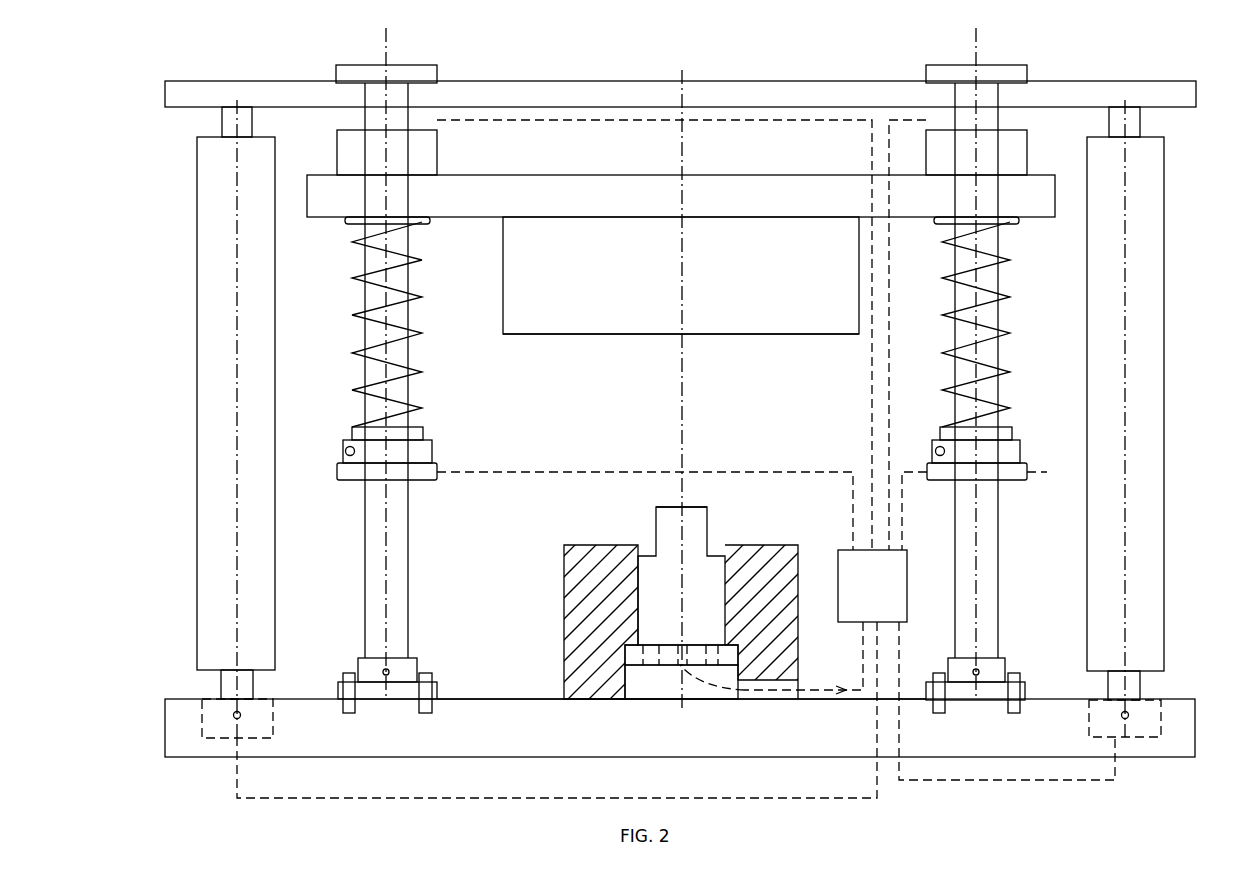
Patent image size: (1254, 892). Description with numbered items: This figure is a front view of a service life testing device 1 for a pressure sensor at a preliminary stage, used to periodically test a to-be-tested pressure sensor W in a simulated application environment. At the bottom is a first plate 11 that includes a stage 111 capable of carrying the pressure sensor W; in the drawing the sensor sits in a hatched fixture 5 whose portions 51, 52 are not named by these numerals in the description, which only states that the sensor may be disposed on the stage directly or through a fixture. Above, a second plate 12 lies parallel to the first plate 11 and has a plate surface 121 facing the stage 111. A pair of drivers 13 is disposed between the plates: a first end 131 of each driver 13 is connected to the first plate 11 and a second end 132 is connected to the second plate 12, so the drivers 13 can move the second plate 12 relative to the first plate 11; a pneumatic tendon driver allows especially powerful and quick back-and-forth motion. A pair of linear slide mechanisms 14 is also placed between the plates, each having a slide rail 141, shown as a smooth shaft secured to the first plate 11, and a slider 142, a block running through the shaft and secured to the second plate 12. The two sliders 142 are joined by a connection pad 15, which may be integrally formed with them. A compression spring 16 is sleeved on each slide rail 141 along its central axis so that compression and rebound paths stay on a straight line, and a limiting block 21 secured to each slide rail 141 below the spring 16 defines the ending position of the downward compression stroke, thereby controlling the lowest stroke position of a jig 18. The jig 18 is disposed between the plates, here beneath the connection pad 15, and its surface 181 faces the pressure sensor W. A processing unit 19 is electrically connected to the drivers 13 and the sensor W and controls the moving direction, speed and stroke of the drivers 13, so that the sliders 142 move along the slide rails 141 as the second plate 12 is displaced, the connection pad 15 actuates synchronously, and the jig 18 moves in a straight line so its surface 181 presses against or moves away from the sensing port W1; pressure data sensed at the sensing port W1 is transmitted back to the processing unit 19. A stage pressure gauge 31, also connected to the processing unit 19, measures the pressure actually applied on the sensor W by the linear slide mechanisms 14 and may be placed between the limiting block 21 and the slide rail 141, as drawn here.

The service life testing device 1 is at (1224, 57).
The first plate 11 is at (560, 757).
The stage 111 is at (516, 698).
The second plate 12 is at (626, 80).
The plate surface 121 is at (560, 121).
The driver 13 is at (197, 348).
The first end 131 is at (220, 684).
The second end 132 is at (222, 122).
The linear slide mechanism 14 is at (687, 361).
The slide rail 141 is at (403, 313).
The slider 142 is at (430, 149).
The connection pad 15 is at (650, 175).
The compression spring 16 is at (418, 333).
The jig 18 is at (600, 337).
The surface 181 is at (636, 336).
The processing unit 19 is at (900, 577).
The limiting block 21 is at (425, 452).
The stage pressure gauge 31 is at (340, 470).
The fixture 5 is at (676, 596).
The fixture body 51 is at (735, 548).
The fixture base 52 is at (703, 545).
The to-be-tested pressure sensor W is at (665, 540).
The sensing port W1 is at (675, 506).